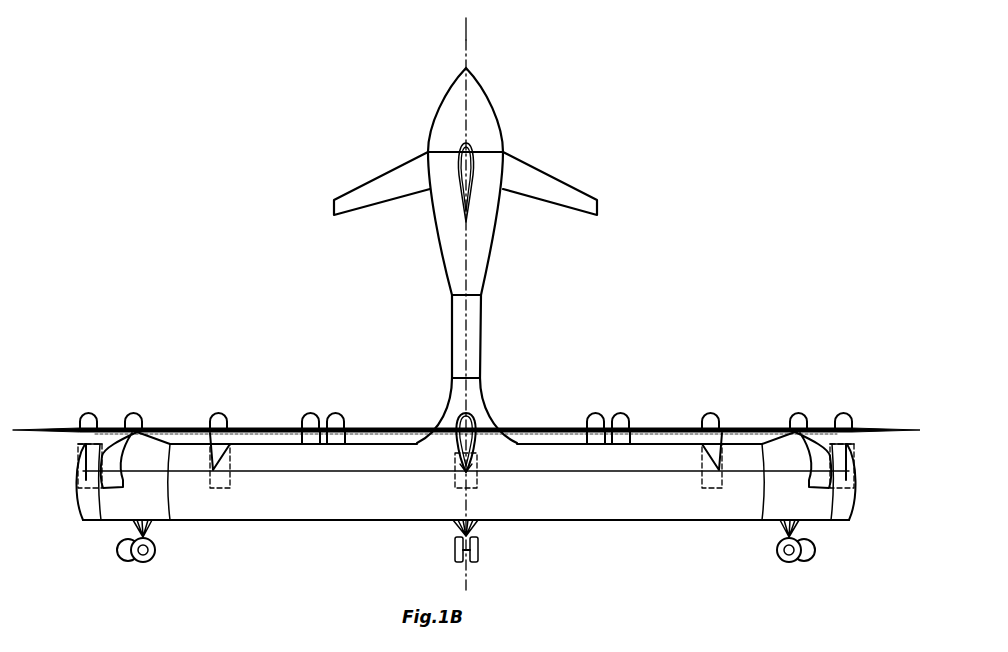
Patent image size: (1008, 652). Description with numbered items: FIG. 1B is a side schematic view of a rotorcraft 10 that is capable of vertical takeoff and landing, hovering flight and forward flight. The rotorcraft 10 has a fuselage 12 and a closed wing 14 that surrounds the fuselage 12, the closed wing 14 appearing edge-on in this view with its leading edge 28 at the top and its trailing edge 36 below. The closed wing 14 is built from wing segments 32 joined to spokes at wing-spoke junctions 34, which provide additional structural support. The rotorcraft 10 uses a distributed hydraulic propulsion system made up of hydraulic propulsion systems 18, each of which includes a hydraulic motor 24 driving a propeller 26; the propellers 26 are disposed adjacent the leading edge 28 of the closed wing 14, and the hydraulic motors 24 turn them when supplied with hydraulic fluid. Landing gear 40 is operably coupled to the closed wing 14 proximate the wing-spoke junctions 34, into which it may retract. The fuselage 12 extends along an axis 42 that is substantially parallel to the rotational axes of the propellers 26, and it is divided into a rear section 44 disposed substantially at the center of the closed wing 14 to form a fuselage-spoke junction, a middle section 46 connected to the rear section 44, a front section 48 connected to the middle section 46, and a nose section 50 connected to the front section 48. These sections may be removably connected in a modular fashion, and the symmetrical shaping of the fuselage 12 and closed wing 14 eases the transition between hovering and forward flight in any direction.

The rotorcraft 10 is at (222, 318).
The fuselage 12 is at (490, 300).
The closed wing 14 is at (635, 520).
The hydraulic propulsion system 18 is at (453, 475).
The hydraulic motor 24 is at (477, 478).
The propeller 26 is at (453, 413).
The leading edge 28 is at (277, 440).
The wing segment 32 is at (328, 520).
The wing-spoke junction 34 is at (111, 520).
The trailing edge 36 is at (248, 520).
The landing gear 40 is at (479, 548).
The axis 42 is at (467, 35).
The rear section 44 is at (488, 413).
The middle section 46 is at (478, 352).
The front section 48 is at (442, 240).
The nose section 50 is at (447, 100).